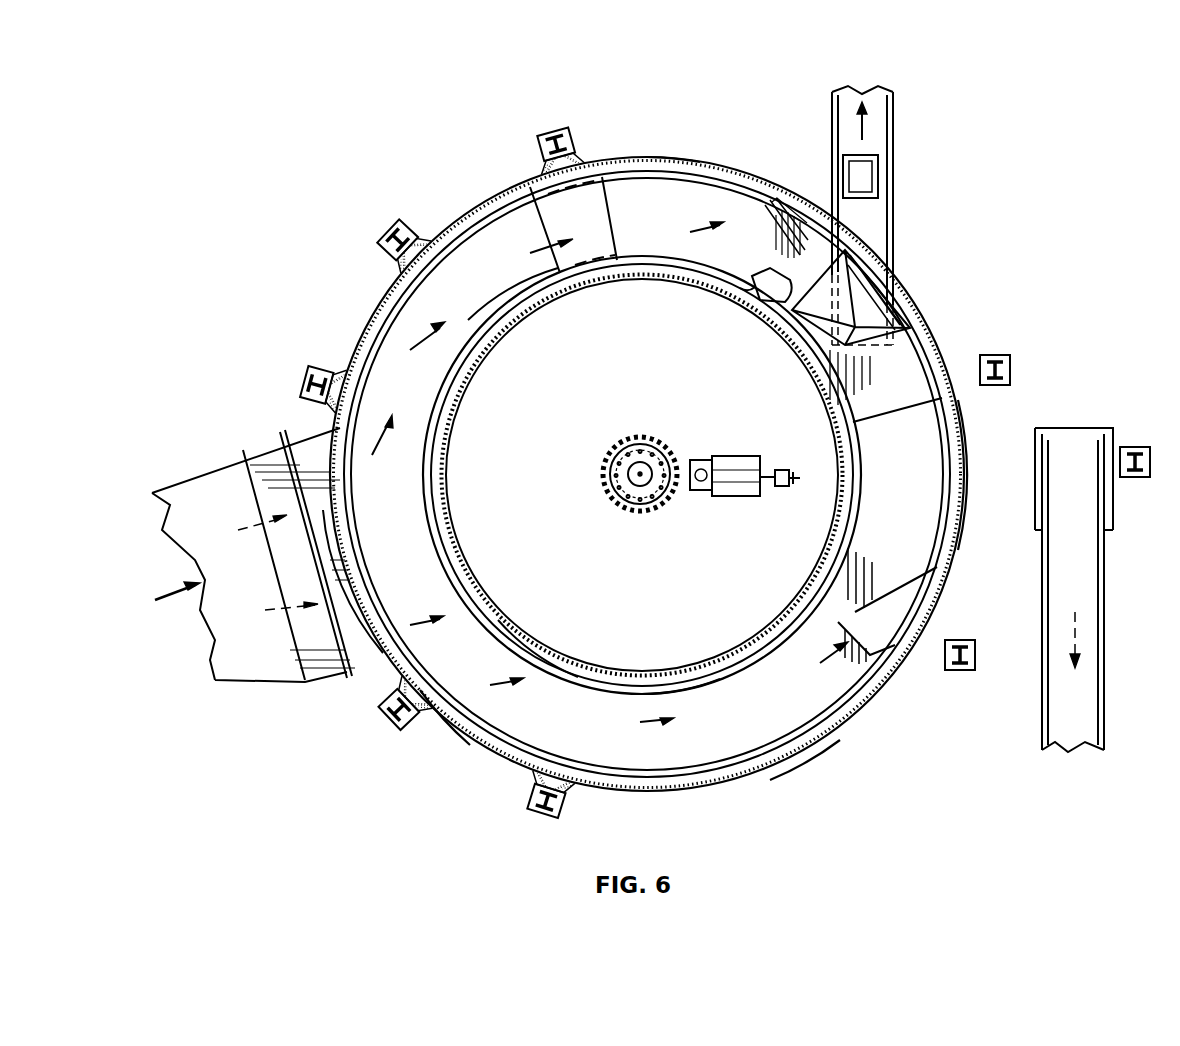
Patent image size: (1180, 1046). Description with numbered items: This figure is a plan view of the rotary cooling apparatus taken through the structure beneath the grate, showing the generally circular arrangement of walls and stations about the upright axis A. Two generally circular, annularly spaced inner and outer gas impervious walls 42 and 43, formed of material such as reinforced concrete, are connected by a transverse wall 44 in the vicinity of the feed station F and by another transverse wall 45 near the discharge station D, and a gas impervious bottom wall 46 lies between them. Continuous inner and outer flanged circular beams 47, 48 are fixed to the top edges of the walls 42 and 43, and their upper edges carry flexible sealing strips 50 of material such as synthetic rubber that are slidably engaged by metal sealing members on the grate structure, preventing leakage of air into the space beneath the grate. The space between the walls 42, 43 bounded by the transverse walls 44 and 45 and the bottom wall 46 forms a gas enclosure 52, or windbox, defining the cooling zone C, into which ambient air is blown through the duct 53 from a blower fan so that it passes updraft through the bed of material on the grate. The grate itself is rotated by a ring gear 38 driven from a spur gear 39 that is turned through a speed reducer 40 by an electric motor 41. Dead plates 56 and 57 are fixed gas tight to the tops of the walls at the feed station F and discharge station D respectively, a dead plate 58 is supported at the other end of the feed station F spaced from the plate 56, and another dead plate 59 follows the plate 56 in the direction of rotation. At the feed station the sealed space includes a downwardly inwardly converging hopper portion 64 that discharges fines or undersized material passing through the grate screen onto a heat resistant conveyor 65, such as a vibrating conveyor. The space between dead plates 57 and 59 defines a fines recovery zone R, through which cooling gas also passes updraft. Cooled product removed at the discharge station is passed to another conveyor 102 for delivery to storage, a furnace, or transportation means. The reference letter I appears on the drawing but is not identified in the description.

The ring gear 38 is at (594, 496).
The spur gear 39 is at (705, 460).
The speed reducer 40 is at (734, 496).
The electric motor 41 is at (782, 486).
The inner gas impervious wall 42 is at (459, 388).
The outer gas impervious wall 43 is at (368, 326).
The transverse wall 44 is at (758, 284).
The transverse wall 45 is at (860, 640).
The bottom wall 46 is at (690, 704).
The inner flanged circular beam 47 is at (490, 335).
The outer flanged circular beam 48 is at (348, 382).
The flexible sealing strip 50 is at (380, 312).
The gas enclosure 52 is at (530, 685).
The duct 53 is at (205, 470).
The dead plate 56 is at (765, 210).
The dead plate 57 is at (920, 576).
The dead plate 58 is at (918, 403).
The dead plate 59 is at (596, 197).
The hopper portion 64 is at (884, 345).
The heat resistant conveyor 65 is at (878, 229).
The conveyor 102 is at (1098, 636).
The upright axis A is at (641, 455).
The cooling zone C is at (454, 740).
The discharge station D is at (974, 451).
The feed station F is at (905, 274).
The inner section I is at (803, 752).
The fines recovery zone R is at (689, 158).